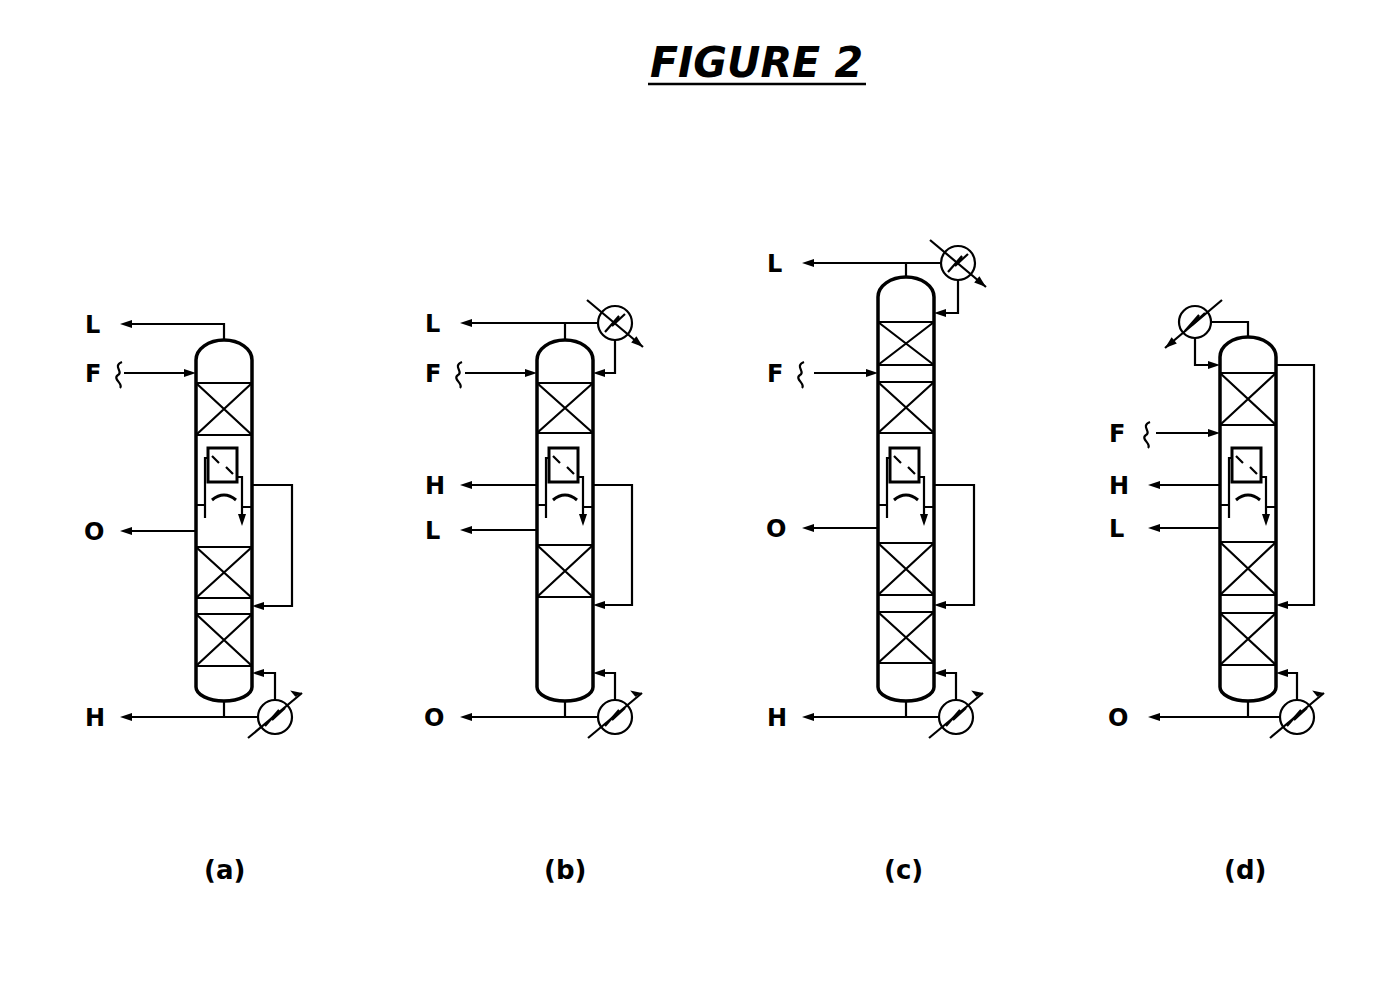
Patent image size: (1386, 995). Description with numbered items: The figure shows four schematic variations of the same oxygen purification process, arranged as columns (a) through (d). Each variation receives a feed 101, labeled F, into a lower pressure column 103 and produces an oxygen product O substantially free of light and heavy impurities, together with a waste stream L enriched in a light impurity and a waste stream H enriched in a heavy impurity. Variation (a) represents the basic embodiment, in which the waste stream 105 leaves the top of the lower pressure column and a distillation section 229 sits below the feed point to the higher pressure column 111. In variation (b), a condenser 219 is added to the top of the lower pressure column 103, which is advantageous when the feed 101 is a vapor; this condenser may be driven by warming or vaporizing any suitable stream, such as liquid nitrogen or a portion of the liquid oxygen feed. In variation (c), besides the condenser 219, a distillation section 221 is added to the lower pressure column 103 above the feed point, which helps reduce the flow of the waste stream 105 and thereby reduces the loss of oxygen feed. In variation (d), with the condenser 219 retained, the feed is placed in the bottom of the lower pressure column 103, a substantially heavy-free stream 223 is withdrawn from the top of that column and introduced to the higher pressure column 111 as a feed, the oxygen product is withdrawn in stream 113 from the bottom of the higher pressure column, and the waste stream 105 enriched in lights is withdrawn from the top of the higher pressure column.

The feed 101 is at (163, 376).
The lower pressure column 103 is at (593, 450).
The waste stream L 105 is at (873, 263).
The higher pressure column 111 is at (196, 607).
The oxygen product stream 113 is at (1185, 719).
The condenser 219 is at (628, 308).
The distillation section 221 is at (893, 348).
The substantially heavy-free stream 223 is at (1314, 485).
The distillation section 229 is at (252, 655).